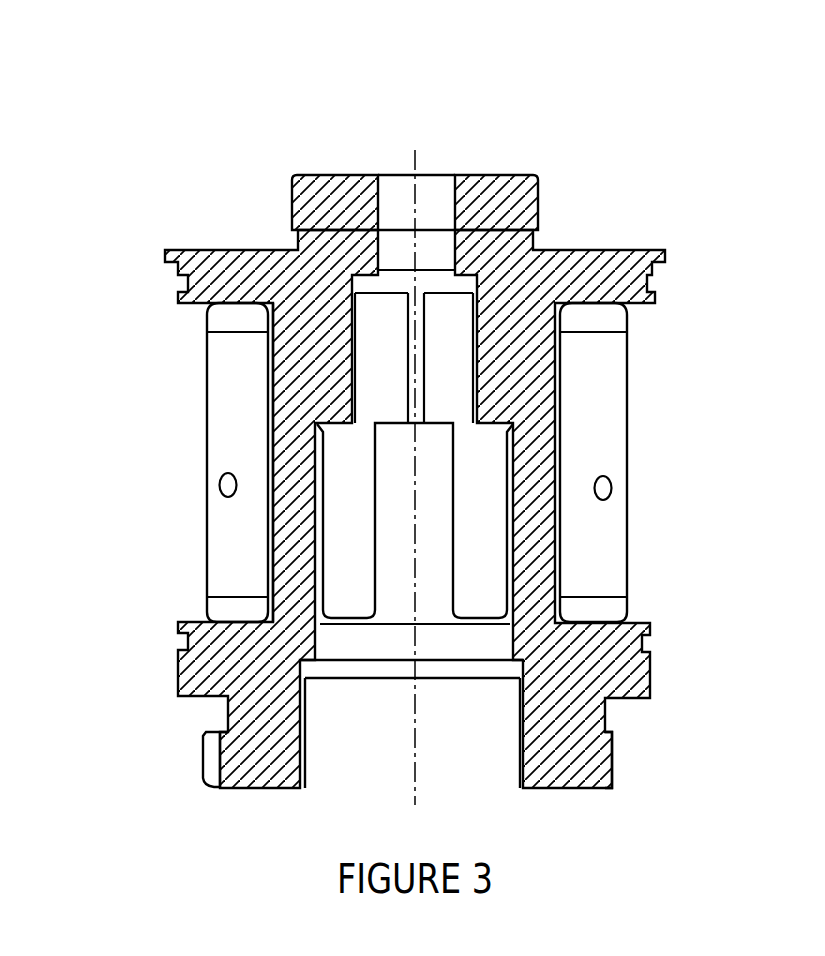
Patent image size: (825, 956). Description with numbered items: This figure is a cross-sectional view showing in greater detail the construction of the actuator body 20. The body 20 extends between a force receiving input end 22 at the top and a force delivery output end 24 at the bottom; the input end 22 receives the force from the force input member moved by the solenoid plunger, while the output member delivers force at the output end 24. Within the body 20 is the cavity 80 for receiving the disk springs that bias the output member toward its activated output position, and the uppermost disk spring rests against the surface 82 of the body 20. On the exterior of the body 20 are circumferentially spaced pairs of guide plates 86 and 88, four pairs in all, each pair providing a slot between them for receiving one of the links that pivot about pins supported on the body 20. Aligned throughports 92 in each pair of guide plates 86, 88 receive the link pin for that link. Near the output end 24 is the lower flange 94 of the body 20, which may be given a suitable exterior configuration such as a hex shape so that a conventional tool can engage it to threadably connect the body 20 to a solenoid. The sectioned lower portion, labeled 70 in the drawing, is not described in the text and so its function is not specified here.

The body 20 is at (585, 250).
The force receiving input end 22 is at (515, 175).
The force delivery output end 24 is at (590, 762).
The lower sleeve ring 70 is at (305, 750).
The cavity 80 is at (370, 517).
The surface 82 is at (293, 493).
The guide plate 86 is at (612, 392).
The guide plate 88 is at (218, 372).
The throughport 92 is at (612, 488).
The lower flange 94 is at (198, 762).